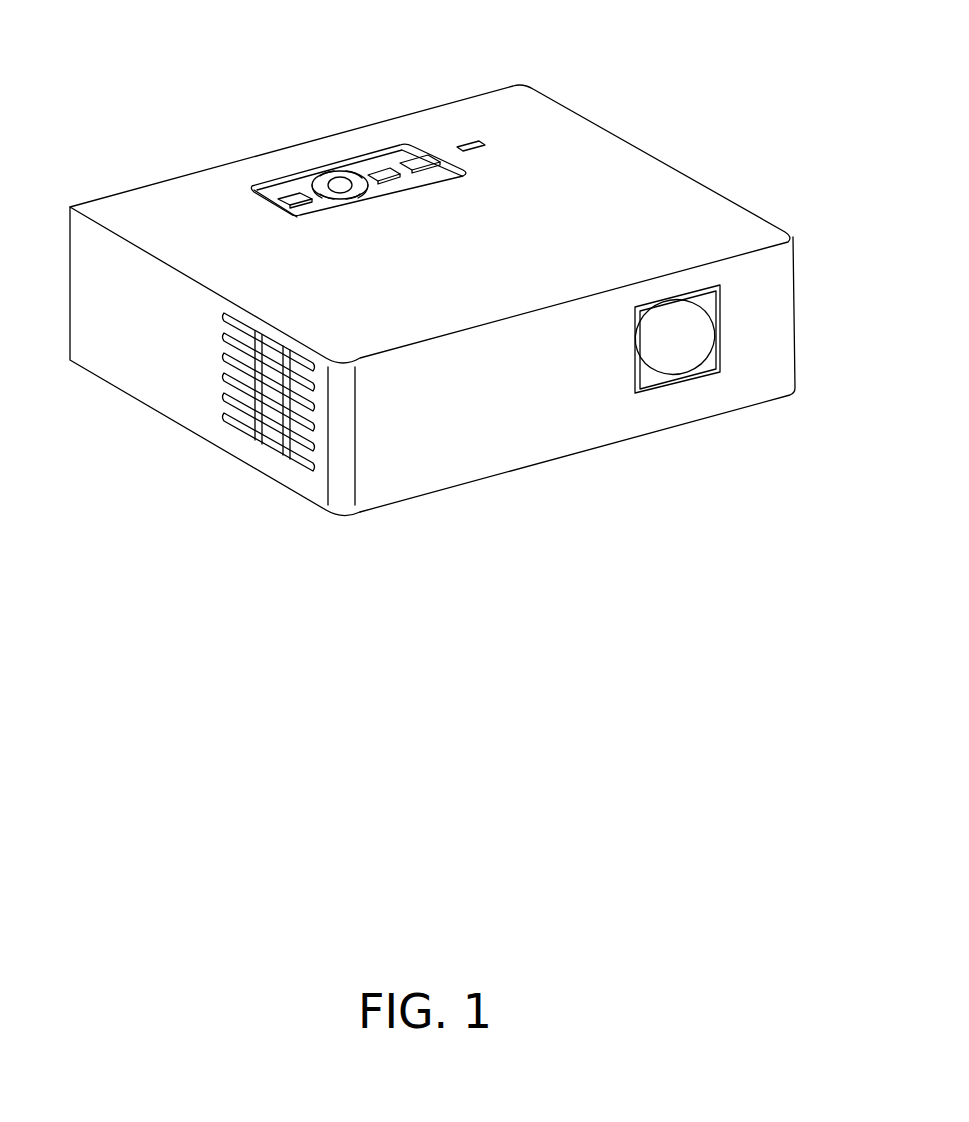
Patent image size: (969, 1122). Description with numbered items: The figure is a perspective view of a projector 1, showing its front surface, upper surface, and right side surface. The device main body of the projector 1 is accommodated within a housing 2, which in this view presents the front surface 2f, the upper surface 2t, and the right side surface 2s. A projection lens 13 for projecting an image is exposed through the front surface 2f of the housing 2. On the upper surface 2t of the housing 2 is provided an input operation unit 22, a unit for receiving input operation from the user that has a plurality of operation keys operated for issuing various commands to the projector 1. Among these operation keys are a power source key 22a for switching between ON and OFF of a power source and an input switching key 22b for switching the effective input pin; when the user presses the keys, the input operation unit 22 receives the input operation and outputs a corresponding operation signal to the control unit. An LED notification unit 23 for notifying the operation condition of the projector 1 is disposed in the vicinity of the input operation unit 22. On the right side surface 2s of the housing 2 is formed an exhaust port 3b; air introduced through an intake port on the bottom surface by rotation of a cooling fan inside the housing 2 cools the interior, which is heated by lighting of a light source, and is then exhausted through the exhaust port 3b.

The projector 1 is at (728, 113).
The housing 2 is at (160, 194).
The upper surface 2t is at (218, 180).
The right side surface 2s is at (145, 383).
The front surface 2f is at (520, 450).
The input operation unit 22 is at (283, 188).
The power source key 22a is at (420, 158).
The input switching key 22b is at (383, 172).
The LED notification unit 23 is at (470, 140).
The projection lens 13 is at (672, 348).
The exhaust port 3b is at (250, 410).